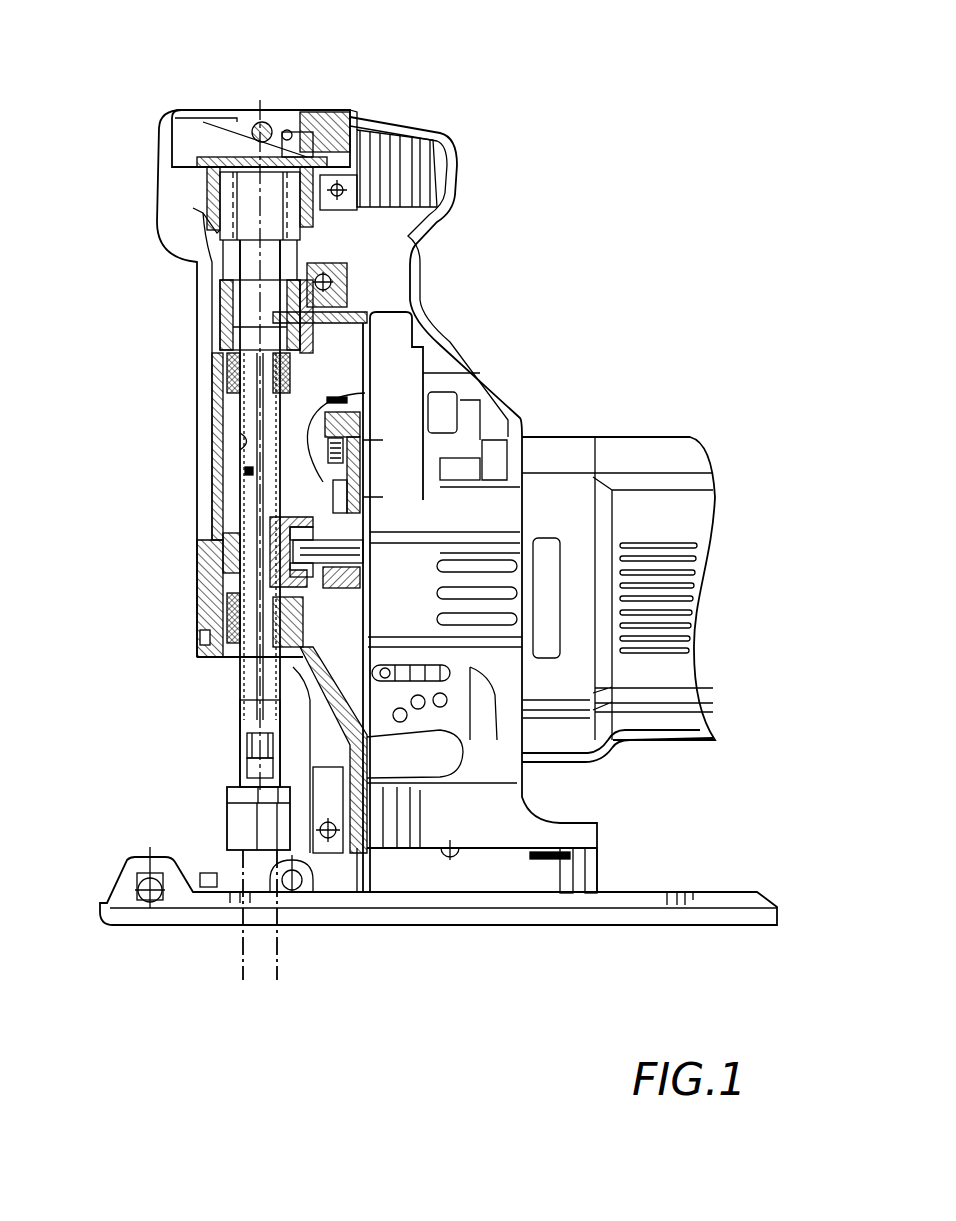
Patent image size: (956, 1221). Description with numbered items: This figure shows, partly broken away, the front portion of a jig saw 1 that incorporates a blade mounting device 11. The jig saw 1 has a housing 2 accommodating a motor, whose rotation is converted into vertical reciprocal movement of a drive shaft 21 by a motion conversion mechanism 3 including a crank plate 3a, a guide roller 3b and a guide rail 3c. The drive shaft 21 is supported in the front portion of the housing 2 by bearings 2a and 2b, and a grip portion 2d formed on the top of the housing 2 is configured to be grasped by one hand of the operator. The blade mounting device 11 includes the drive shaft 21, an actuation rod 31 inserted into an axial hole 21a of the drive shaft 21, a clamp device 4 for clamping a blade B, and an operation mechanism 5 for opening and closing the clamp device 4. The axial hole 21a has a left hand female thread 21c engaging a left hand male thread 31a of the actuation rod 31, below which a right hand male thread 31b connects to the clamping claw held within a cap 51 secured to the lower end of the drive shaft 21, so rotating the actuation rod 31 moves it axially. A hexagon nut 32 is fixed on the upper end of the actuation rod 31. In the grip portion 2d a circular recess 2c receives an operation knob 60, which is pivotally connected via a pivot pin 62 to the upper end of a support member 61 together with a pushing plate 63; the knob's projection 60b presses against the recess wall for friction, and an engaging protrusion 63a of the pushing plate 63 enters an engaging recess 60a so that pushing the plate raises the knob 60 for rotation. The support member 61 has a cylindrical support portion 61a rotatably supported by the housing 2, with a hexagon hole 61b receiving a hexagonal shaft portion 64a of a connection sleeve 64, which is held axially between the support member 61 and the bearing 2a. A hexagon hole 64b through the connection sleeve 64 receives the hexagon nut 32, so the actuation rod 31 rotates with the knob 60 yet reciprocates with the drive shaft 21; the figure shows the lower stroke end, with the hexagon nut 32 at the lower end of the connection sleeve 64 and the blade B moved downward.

The jig saw 1 is at (562, 343).
The housing 2 is at (483, 368).
The bearing 2a is at (213, 385).
The bearing 2b is at (207, 615).
The circular recess 2c is at (183, 110).
The grip portion 2d is at (457, 148).
The motion conversion mechanism 3 is at (795, 353).
The crank plate 3a is at (323, 398).
The guide roller 3b is at (360, 520).
The guide rail 3c is at (300, 613).
The clamp device 4 is at (205, 797).
The operation mechanism 5 is at (373, 90).
The blade mounting device 11 is at (155, 665).
The drive shaft 21 is at (247, 470).
The axial hole 21a is at (253, 435).
The left hand female thread 21c is at (240, 707).
The actuation rod 31 is at (253, 510).
The left hand male thread 31a is at (240, 727).
The right hand male thread 31b is at (237, 757).
The hexagon nut 32 is at (253, 338).
The cap 51 is at (243, 827).
The operation knob 60 is at (323, 110).
The engaging recess 60a is at (289, 130).
The projection 60b is at (360, 112).
The support member 61 is at (200, 158).
The cylindrical support portion 61a is at (207, 190).
The hexagon hole 61b is at (203, 213).
The pivot pin 62 is at (267, 122).
The pushing plate 63 is at (205, 112).
The engaging protrusion 63a is at (383, 143).
The connection sleeve 64 is at (300, 247).
The hexagonal shaft portion 64a is at (360, 208).
The hexagon hole 64b is at (300, 305).
The blade B is at (277, 965).